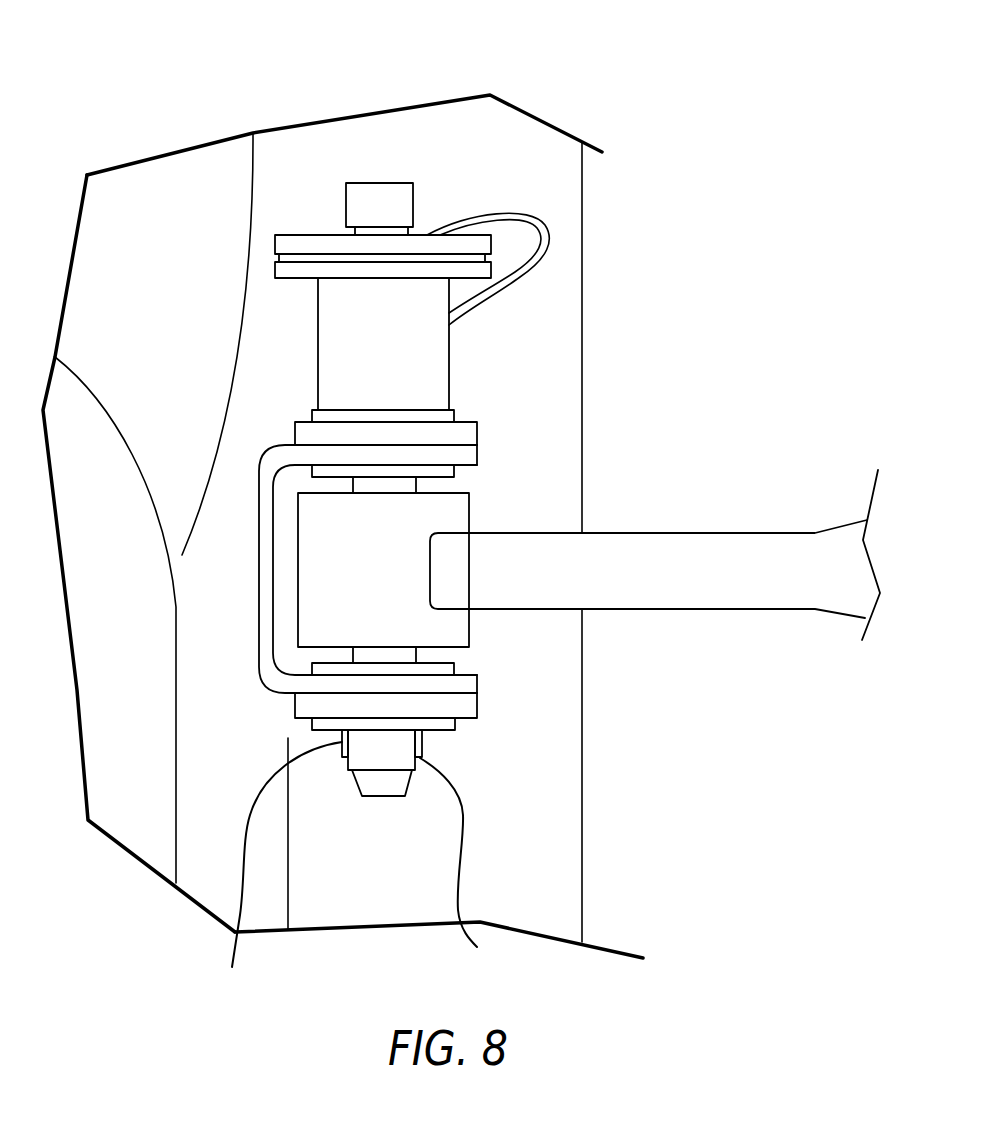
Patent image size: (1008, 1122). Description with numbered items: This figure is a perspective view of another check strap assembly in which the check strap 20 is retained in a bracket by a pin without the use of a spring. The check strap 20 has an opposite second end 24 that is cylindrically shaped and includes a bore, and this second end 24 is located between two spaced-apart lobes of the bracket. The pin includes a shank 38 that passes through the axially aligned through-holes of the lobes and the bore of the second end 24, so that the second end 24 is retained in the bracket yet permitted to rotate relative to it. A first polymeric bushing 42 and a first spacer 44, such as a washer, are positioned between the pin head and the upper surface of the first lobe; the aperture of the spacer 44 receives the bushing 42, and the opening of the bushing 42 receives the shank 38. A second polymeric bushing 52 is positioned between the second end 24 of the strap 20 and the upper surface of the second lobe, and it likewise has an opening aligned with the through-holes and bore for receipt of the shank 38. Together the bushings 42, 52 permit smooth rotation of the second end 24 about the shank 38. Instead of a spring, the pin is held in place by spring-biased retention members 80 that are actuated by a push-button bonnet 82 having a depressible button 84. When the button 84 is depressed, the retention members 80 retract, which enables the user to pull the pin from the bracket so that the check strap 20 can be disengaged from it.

The check strap 20 is at (710, 562).
The second end 24 is at (372, 595).
The shank 38 is at (370, 796).
The first polymeric bushing 42 is at (420, 415).
The first spacer 44 is at (465, 430).
The second polymeric bushing 52 is at (450, 733).
The spring-biased retention members 80 is at (356, 873).
The push-button bonnet 82 is at (453, 200).
The depressible button 84 is at (373, 198).